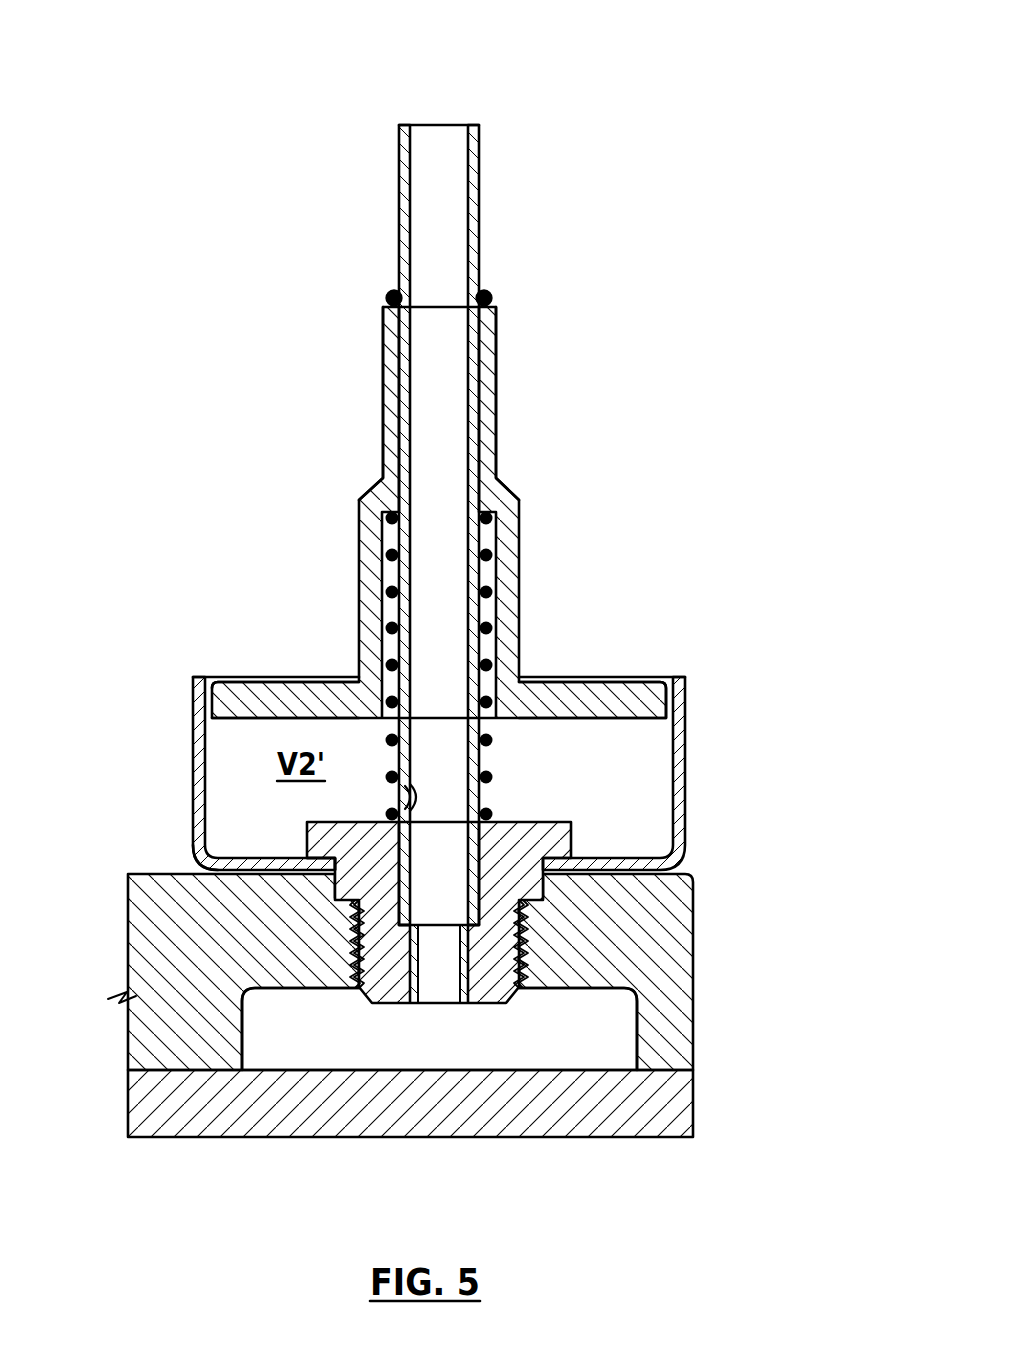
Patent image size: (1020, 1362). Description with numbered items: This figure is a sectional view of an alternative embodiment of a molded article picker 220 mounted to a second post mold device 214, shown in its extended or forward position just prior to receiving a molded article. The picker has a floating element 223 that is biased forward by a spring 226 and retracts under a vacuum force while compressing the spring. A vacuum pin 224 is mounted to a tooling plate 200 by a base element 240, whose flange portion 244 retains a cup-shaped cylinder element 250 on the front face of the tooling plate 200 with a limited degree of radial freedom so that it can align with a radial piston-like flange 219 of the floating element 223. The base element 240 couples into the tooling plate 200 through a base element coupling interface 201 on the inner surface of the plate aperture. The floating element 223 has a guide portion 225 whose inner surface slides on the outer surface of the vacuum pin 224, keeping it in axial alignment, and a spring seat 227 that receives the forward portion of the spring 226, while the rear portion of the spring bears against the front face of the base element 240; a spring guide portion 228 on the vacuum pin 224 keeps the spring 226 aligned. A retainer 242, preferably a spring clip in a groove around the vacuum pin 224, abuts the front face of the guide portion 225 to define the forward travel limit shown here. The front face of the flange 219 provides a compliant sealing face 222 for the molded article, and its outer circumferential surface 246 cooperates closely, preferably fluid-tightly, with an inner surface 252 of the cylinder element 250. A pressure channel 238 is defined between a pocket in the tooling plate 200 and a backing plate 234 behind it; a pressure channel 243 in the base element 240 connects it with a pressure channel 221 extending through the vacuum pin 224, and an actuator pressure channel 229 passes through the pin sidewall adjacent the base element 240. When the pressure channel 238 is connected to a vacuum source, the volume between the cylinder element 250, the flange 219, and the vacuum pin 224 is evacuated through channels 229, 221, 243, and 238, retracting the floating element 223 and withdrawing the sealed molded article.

The tooling plate 200 is at (672, 965).
The base element coupling interface 201 is at (372, 955).
The second post mold device 214 is at (704, 1183).
The radial piston-like flange 219 is at (660, 705).
The molded article picker 220 is at (761, 366).
The pressure channel 221 is at (442, 148).
The sealing face 222 is at (658, 680).
The floating element 223 is at (537, 456).
The vacuum pin 224 is at (480, 224).
The guide portion 225 is at (496, 380).
The spring 226 is at (492, 628).
The spring seat 227 is at (519, 522).
The spring guide portion 228 is at (482, 652).
The actuator pressure channel 229 is at (418, 800).
The backing plate 234 is at (672, 1097).
The pressure channel 238 is at (550, 1040).
The base element 240 is at (600, 838).
The retainer 242 is at (490, 292).
The pressure channel 243 is at (444, 993).
The flange portion 244 is at (328, 835).
The outer circumferential surface 246 is at (207, 700).
The cup-shaped cylinder element 250 is at (688, 767).
The inner surface 252 is at (210, 838).